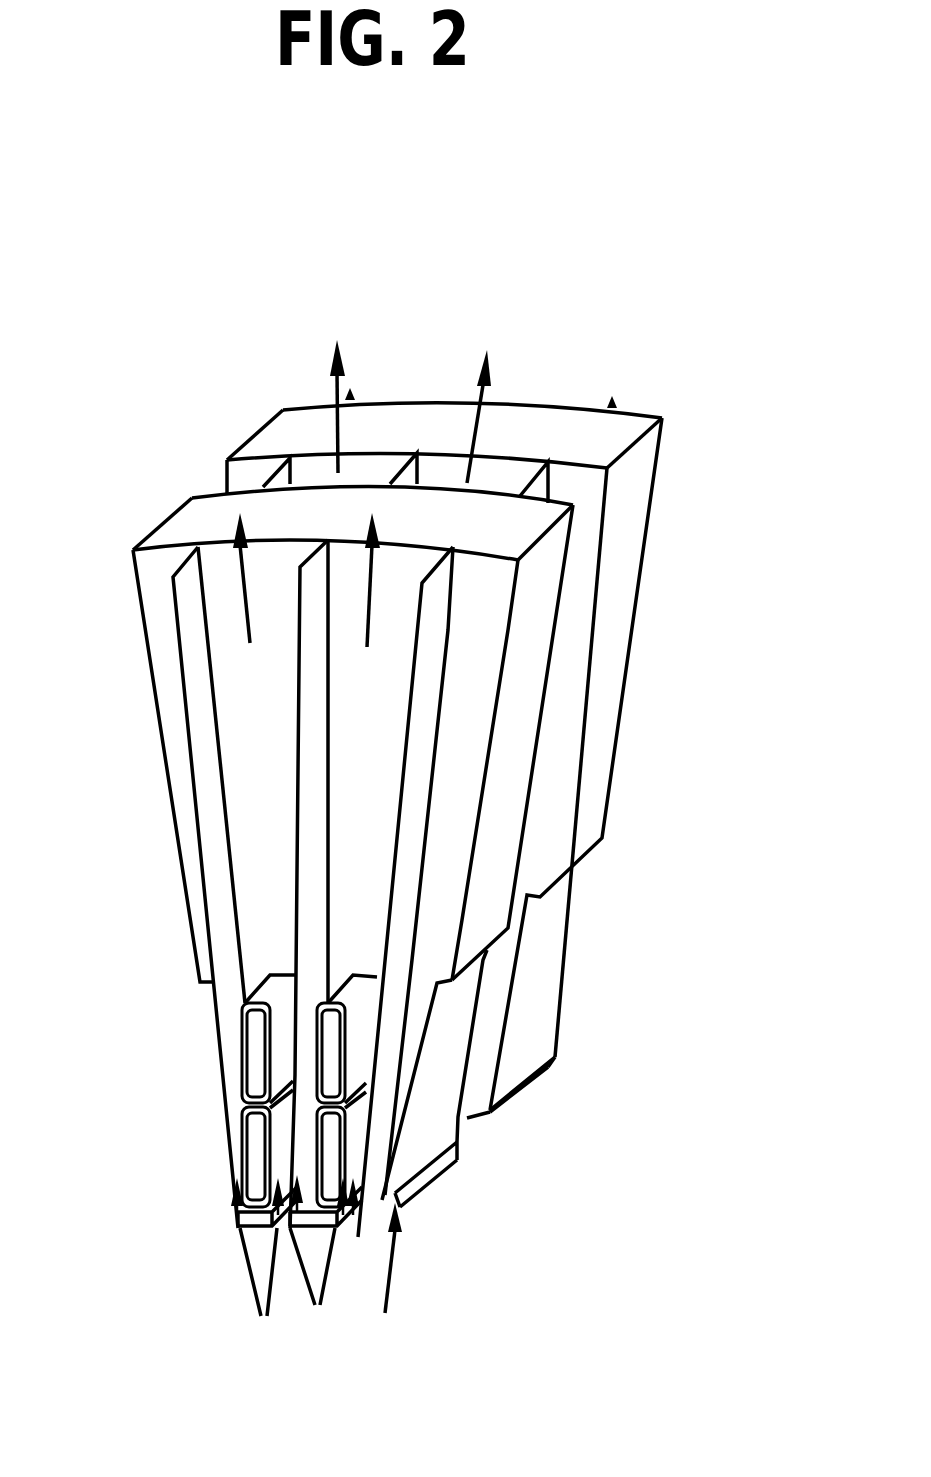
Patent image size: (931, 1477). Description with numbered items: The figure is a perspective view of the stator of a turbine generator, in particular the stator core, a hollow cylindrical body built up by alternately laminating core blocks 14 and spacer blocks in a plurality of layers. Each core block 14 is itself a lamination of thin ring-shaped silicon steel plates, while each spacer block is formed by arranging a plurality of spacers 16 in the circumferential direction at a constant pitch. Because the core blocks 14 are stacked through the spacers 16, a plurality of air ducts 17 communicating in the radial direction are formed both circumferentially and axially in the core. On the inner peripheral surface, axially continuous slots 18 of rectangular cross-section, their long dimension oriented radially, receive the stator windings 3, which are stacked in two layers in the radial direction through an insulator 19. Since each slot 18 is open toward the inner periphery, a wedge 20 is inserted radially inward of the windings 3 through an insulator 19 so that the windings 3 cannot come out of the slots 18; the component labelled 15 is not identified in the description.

The stator windings 3 is at (366, 1059).
The core blocks 14 is at (605, 430).
The lower header block 15 is at (527, 527).
The spacers 16 is at (192, 650).
The air ducts 17 is at (502, 470).
The slots 18 is at (295, 975).
The insulator 19 is at (240, 1207).
The wedge 20 is at (243, 1228).